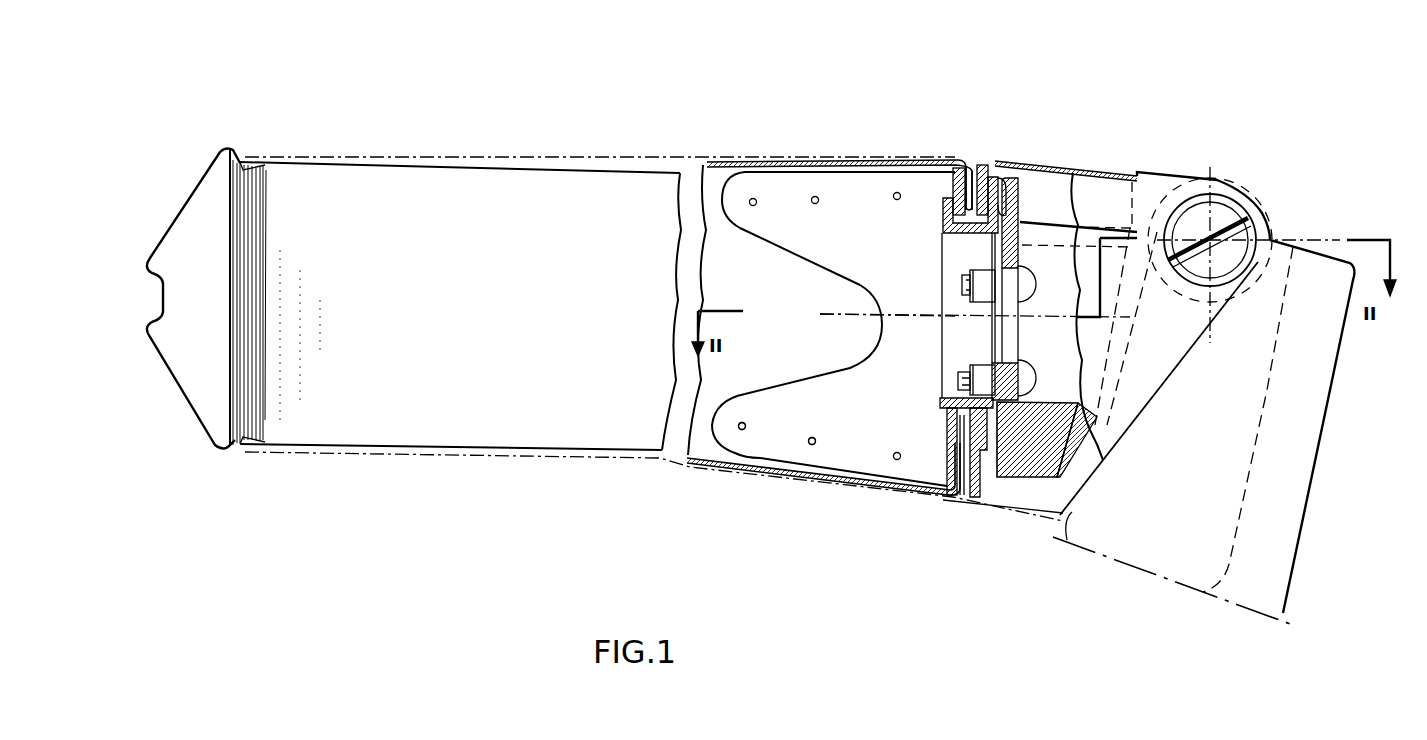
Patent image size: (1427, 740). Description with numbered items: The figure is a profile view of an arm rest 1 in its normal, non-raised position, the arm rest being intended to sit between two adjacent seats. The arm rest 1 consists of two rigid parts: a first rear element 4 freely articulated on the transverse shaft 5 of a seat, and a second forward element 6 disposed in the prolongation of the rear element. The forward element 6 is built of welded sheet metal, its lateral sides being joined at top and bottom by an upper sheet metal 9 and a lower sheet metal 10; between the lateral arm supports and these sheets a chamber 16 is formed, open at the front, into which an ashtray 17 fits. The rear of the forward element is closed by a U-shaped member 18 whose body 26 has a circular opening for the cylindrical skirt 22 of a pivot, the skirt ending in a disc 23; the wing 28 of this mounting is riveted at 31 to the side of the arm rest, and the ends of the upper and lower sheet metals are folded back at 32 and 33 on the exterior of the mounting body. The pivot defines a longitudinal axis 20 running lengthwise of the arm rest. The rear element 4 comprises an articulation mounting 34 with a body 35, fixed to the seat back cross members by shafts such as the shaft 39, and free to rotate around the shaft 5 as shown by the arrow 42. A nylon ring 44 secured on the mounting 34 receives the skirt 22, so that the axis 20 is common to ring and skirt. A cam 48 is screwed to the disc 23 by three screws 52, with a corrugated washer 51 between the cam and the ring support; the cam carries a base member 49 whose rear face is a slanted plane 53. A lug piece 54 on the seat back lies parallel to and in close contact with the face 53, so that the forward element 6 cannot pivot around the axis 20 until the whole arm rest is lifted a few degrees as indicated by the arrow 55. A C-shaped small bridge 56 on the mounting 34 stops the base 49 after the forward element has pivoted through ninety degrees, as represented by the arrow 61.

The arm rest 1 is at (652, 93).
The first rear element 4 is at (1067, 158).
The transverse shaft 5 is at (1216, 250).
The second forward element 6 is at (556, 160).
The upper sheet metal 9 is at (754, 158).
The lower sheet metal 10 is at (753, 467).
The chamber 16 is at (451, 272).
The ashtray 17 is at (198, 190).
The U-shaped member (mounting) 18 is at (935, 438).
The longitudinal axis 20 is at (898, 320).
The cylindrical skirt 22 is at (950, 250).
The disc 23 is at (960, 258).
The body 26 is at (953, 187).
The wing 28 is at (832, 253).
The rivets 31 is at (812, 437).
The folded-back end of upper sheet metal 32 is at (970, 176).
The folded-back end of lower sheet metal 33 is at (955, 500).
The articulation mounting 34 is at (1182, 170).
The body 35 is at (973, 500).
The shaft 39 is at (1213, 210).
The arrow 42 is at (1290, 210).
The ring 44 is at (950, 388).
The cam 48 is at (1022, 321).
The base member 49 is at (1040, 420).
The corrugated washer 51 is at (988, 450).
The screws 52 is at (1032, 280).
The slanted plane 53 is at (1085, 462).
The lug piece 54 is at (1080, 433).
The arrow 55 is at (257, 77).
The small bridge 56 is at (1117, 203).
The arrow 61 is at (833, 330).